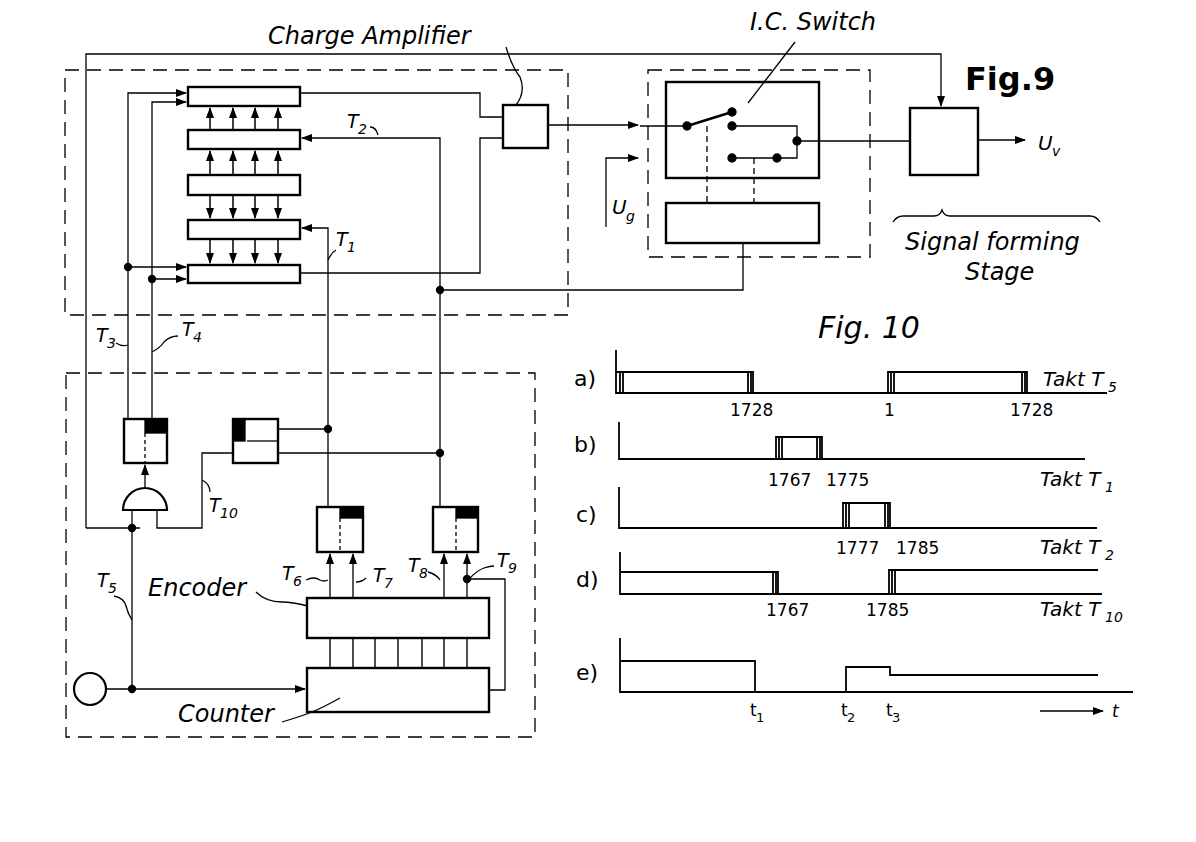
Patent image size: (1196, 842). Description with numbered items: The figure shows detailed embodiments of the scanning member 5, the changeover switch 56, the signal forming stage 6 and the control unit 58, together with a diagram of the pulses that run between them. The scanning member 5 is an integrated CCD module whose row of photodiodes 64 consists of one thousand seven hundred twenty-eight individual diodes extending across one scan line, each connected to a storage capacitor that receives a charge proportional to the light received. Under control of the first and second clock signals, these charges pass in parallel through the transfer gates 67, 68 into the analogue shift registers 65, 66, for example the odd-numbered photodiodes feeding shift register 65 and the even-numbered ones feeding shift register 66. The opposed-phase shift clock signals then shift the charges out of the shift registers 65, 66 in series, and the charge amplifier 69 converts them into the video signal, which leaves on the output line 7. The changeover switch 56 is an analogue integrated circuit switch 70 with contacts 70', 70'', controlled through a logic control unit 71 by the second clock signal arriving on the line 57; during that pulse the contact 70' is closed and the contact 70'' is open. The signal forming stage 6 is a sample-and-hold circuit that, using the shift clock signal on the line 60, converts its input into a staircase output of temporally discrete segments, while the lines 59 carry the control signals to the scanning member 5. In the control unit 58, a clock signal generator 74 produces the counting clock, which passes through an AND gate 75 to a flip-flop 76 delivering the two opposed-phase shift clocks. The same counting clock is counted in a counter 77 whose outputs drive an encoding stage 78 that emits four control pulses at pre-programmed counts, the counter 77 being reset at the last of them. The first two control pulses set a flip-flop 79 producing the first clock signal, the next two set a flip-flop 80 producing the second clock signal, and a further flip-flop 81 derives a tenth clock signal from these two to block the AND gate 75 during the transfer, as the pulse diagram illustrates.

The scanning member 5 is at (568, 78).
The signal forming stage 6 is at (948, 165).
The output line 7 is at (996, 142).
The changeover switch 56 is at (858, 254).
The line 57 is at (624, 290).
The control unit 58 is at (246, 386).
The lines 59 is at (132, 404).
The line 60 is at (939, 78).
The row of photodiodes 64 is at (292, 186).
The analogue shift register 65 is at (288, 96).
The analogue shift register 66 is at (220, 279).
The transfer gate 67 is at (296, 140).
The transfer gate 68 is at (200, 230).
The charge amplifier 69 is at (522, 148).
The analogue integrated circuit switch 70 is at (761, 130).
The contact 70' is at (764, 142).
The contact 70'' is at (688, 109).
The logic control unit 71 is at (805, 228).
The clock signal generator 74 is at (96, 706).
The AND gate 75 is at (140, 498).
The flip-flop 76 is at (158, 440).
The counter 77 is at (308, 678).
The encoding stage 78 is at (308, 620).
The flip-flop 79 is at (322, 520).
The flip-flop 80 is at (452, 514).
The flip-flop 81 is at (264, 424).